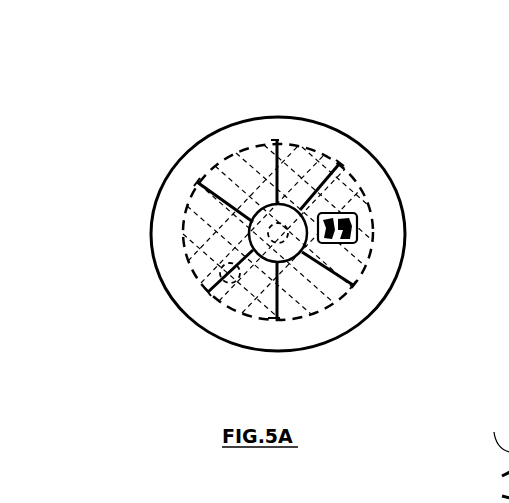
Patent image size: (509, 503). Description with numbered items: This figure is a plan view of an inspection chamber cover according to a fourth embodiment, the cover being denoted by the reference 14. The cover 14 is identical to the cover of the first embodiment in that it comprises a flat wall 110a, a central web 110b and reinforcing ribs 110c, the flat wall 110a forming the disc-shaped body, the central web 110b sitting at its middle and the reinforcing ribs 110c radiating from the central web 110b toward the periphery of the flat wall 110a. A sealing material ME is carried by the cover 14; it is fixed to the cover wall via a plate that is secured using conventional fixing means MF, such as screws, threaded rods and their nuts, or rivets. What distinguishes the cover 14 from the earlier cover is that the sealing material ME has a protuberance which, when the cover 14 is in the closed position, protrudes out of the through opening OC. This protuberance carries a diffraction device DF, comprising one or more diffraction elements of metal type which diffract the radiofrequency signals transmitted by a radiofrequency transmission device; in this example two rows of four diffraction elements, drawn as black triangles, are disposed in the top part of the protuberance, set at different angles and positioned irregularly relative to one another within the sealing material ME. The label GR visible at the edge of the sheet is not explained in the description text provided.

The cover 14 is at (234, 103).
The flat wall 110a is at (393, 190).
The central web 110b is at (300, 206).
The reinforcing ribs 110c is at (284, 142).
The sealing material ME is at (252, 250).
The fixing means MF is at (268, 241).
The diffraction device DF is at (357, 230).
The through opening OC is at (360, 243).
The groove GR is at (494, 456).